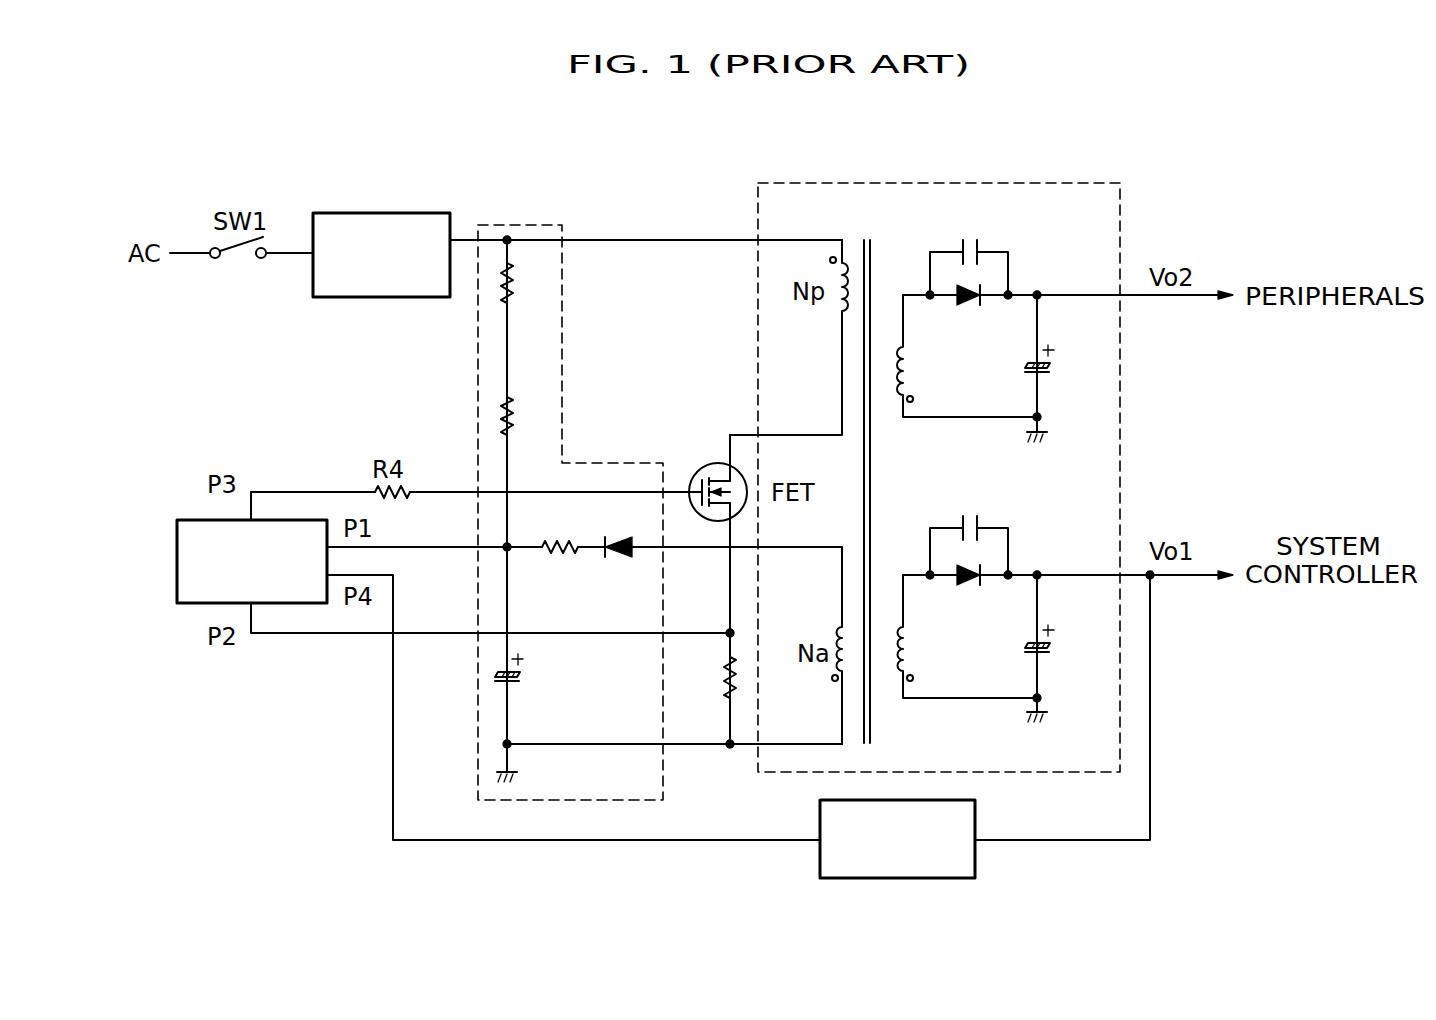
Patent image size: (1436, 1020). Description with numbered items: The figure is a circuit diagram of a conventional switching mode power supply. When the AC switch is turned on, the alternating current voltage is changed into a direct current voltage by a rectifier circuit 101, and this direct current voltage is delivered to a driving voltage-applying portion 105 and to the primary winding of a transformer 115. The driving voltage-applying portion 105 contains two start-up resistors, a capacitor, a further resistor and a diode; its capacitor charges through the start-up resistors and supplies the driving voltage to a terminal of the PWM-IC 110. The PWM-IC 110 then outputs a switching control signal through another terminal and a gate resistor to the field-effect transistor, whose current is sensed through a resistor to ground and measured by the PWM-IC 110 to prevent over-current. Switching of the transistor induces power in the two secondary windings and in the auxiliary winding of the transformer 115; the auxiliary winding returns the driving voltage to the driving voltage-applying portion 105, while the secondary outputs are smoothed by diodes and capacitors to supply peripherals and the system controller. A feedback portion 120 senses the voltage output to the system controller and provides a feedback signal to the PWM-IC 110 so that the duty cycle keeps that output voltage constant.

The rectifier circuit 101 is at (381, 212).
The driving voltage-applying portion 105 is at (516, 225).
The pulse width modulation-integrated circuit (PWM-IC) 110 is at (177, 557).
The transformer 115 is at (935, 183).
The feedback portion 120 is at (898, 878).